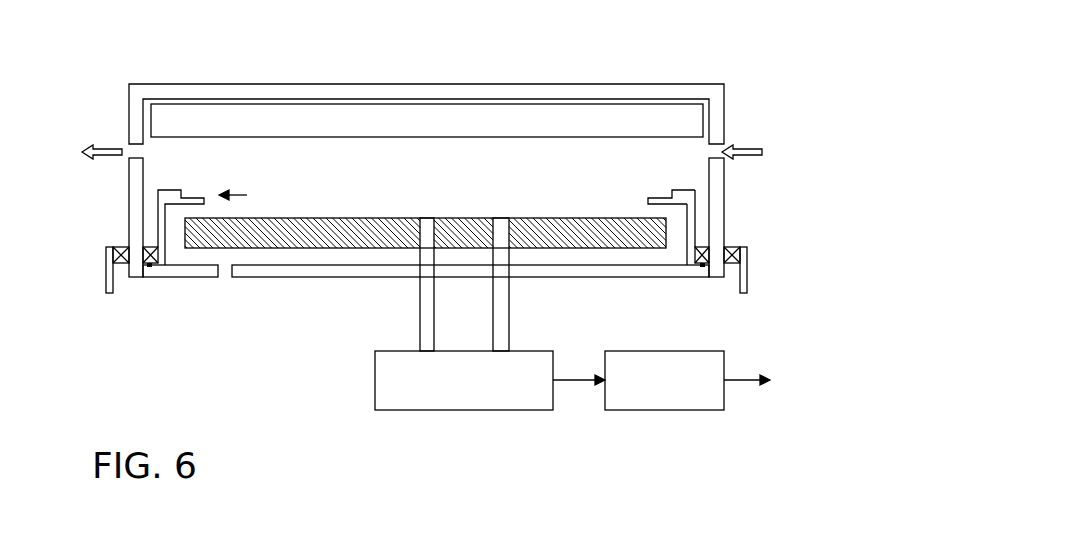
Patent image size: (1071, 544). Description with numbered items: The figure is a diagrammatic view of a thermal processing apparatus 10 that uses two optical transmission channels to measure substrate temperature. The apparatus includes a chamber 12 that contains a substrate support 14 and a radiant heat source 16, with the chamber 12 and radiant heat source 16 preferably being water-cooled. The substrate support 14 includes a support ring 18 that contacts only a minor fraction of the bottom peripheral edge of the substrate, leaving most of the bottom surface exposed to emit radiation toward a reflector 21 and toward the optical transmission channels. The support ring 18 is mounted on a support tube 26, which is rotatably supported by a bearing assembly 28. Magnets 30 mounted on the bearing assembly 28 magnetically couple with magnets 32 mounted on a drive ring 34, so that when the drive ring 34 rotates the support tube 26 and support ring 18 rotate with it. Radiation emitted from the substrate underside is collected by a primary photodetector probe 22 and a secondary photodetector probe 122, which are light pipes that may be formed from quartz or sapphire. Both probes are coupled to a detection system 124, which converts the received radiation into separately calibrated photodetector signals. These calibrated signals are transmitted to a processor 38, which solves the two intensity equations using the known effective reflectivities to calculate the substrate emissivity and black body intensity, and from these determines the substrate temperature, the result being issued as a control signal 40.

The thermal processing apparatus 10 is at (768, 62).
The chamber 12 is at (725, 113).
The substrate support 14 is at (249, 195).
The radiant heat source 16 is at (428, 138).
The support ring 18 is at (650, 203).
The reflector 21 is at (382, 217).
The optical transmission channel 22 is at (418, 298).
The secondary photodetector probe 122 is at (512, 317).
The support tube 26 is at (693, 227).
The bearing assembly 28 is at (150, 265).
The magnets 30 is at (152, 247).
The magnets 32 is at (118, 247).
The drive ring 34 is at (105, 285).
The processor 38 is at (620, 350).
The control signal 40 is at (813, 380).
The detection system 124 is at (375, 380).